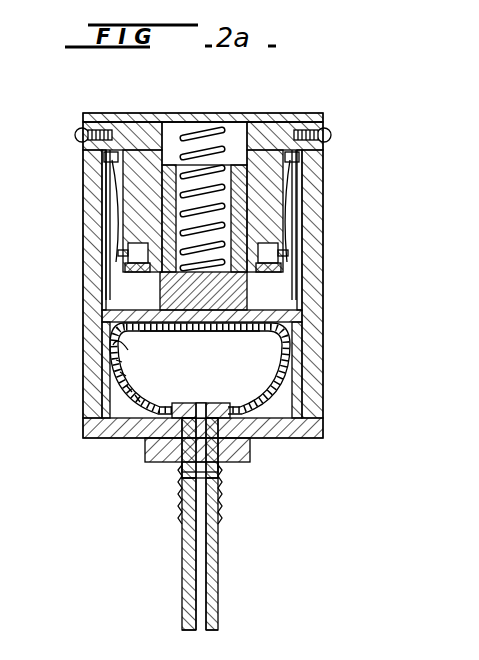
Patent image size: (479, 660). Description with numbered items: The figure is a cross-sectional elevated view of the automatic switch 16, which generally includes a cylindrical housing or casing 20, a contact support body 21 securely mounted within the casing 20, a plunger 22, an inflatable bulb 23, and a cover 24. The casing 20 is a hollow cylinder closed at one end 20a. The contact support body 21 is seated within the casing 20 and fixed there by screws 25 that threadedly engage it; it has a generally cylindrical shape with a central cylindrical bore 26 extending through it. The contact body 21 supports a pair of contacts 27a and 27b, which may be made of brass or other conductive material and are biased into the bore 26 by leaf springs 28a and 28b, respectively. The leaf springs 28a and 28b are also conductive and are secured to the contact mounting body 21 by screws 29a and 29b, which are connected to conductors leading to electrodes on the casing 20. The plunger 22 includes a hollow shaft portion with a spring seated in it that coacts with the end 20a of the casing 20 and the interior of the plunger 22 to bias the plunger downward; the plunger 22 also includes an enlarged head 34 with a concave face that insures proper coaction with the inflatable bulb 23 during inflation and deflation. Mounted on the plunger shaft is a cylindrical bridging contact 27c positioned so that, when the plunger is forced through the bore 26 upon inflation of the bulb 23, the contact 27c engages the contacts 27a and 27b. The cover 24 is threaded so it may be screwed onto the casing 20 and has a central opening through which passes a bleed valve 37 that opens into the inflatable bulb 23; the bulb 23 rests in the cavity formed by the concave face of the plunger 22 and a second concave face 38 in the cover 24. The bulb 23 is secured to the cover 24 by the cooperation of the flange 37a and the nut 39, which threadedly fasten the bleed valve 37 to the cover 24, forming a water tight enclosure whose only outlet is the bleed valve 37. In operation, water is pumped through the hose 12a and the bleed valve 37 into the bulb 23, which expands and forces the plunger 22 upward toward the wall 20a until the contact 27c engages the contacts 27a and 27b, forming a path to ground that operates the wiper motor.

The hose 12a is at (183, 590).
The automatic switch 16 is at (74, 408).
The cylindrical casing 20 is at (83, 188).
The closed end of casing 20a is at (141, 113).
The contact support body 21 is at (152, 113).
The plunger 22 is at (118, 240).
The inflatable bulb 23 is at (238, 130).
The cover 24 is at (118, 438).
The screws 25 is at (75, 134).
The central cylindrical bore 26 is at (250, 116).
The contact 27a is at (125, 288).
The contact 27b is at (270, 268).
The cylindrical bridging contact 27c is at (102, 318).
The leaf spring 28a is at (110, 226).
The leaf spring 28b is at (294, 224).
The screw 29a is at (100, 165).
The screw 29b is at (300, 160).
The enlarged head 34 is at (112, 338).
The bleed valve 37 is at (183, 466).
The flange 37a is at (210, 403).
The second concave face 38 is at (278, 440).
The nut 39 is at (245, 462).